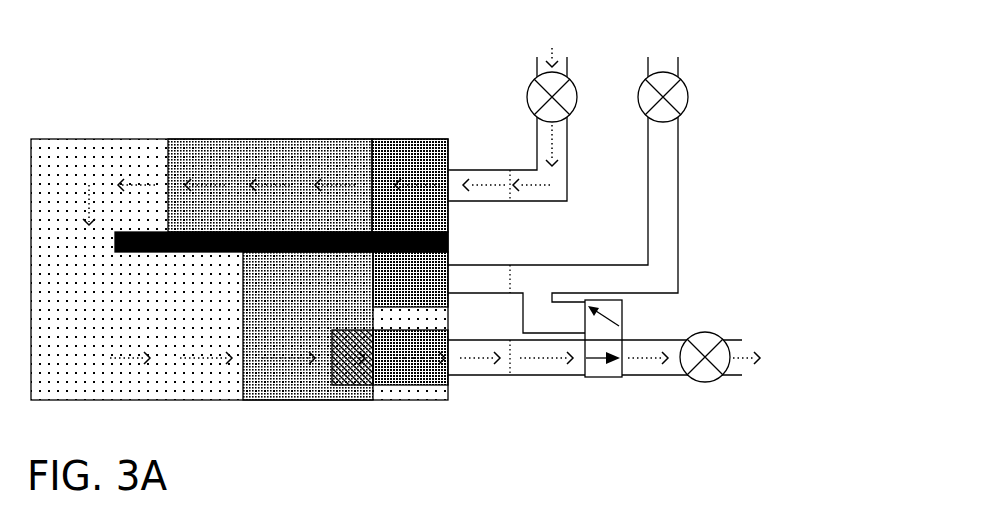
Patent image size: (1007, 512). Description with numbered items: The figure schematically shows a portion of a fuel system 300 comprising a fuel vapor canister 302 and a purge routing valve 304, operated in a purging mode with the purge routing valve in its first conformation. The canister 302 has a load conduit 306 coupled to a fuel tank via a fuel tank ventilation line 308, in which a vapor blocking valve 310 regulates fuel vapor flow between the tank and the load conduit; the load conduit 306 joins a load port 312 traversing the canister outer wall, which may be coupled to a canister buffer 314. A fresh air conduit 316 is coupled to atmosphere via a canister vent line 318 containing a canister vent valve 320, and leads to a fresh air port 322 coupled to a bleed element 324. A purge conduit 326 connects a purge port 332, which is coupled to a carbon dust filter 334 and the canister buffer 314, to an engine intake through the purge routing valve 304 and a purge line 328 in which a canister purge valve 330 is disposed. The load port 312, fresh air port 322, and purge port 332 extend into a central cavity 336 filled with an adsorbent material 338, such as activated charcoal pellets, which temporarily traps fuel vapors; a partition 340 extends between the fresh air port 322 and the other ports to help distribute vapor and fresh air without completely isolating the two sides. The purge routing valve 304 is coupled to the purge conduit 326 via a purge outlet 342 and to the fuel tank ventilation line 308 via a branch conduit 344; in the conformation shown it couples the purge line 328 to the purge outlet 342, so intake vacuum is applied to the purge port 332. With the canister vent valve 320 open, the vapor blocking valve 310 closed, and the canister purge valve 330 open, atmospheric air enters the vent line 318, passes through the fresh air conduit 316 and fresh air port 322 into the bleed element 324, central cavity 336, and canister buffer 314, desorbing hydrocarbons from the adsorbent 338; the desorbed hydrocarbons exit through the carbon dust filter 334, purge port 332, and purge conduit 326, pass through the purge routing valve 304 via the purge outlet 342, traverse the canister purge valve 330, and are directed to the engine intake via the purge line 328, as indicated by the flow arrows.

The fuel system 300 is at (134, 53).
The fuel vapor canister 302 is at (92, 139).
The purge routing valve 304 is at (612, 378).
The load conduit 306 is at (496, 265).
The fuel tank ventilation line 308 is at (678, 188).
The vapor blocking valve 310 is at (688, 100).
The load port 312 is at (429, 275).
The canister buffer 314 is at (285, 386).
The fresh air conduit 316 is at (500, 170).
The canister vent line 318 is at (547, 201).
The canister vent valve 320 is at (527, 100).
The fresh air port 322 is at (425, 161).
The bleed element 324 is at (218, 161).
The purge conduit 326 is at (500, 376).
The purge line 328 is at (676, 340).
The canister purge valve 330 is at (712, 380).
The purge port 332 is at (428, 353).
The carbon dust filter 334 is at (342, 330).
The central cavity 336 is at (75, 380).
The adsorbent material 338 is at (181, 315).
The partition 340 is at (143, 252).
The purge outlet 342 is at (555, 376).
The branch conduit 344 is at (523, 305).